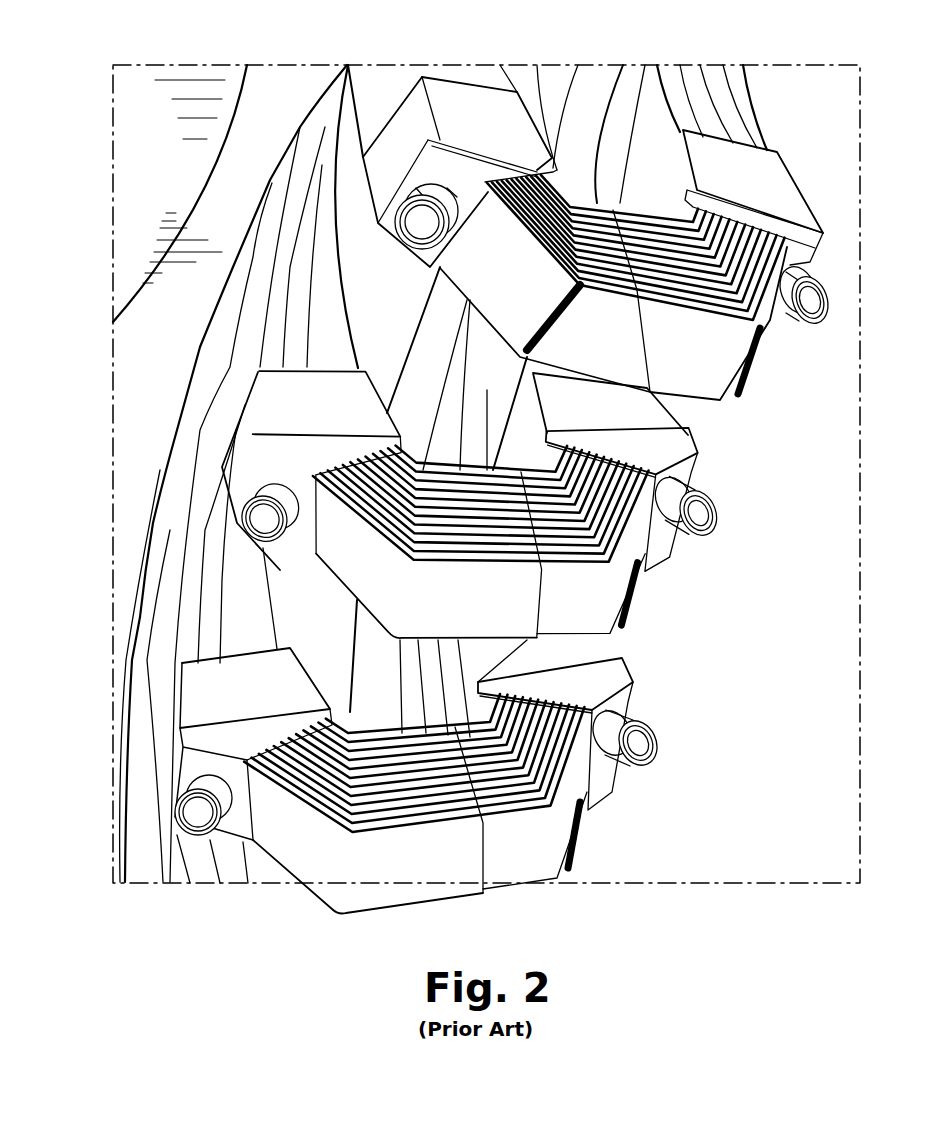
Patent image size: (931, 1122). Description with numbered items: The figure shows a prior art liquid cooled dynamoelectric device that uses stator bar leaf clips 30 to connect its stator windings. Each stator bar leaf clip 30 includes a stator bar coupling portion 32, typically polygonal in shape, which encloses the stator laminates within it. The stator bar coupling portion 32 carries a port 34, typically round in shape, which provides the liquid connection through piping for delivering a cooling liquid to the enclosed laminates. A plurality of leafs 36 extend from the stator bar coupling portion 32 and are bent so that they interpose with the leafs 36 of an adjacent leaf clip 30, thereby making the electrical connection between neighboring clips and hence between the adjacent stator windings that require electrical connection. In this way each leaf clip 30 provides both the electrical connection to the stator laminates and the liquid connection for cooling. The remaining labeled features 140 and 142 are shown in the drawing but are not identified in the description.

The stator bar leaf clip 30 is at (369, 824).
The stator bar coupling portion 32 is at (215, 690).
The port 34 is at (191, 820).
The leafs 36 is at (360, 912).
The tube bundle 140 is at (185, 622).
The tube bundle 142 is at (743, 105).